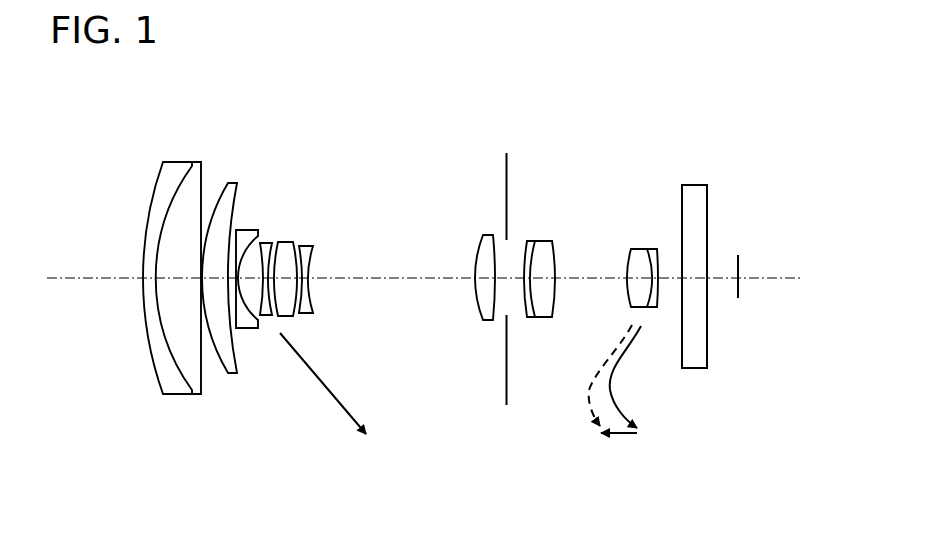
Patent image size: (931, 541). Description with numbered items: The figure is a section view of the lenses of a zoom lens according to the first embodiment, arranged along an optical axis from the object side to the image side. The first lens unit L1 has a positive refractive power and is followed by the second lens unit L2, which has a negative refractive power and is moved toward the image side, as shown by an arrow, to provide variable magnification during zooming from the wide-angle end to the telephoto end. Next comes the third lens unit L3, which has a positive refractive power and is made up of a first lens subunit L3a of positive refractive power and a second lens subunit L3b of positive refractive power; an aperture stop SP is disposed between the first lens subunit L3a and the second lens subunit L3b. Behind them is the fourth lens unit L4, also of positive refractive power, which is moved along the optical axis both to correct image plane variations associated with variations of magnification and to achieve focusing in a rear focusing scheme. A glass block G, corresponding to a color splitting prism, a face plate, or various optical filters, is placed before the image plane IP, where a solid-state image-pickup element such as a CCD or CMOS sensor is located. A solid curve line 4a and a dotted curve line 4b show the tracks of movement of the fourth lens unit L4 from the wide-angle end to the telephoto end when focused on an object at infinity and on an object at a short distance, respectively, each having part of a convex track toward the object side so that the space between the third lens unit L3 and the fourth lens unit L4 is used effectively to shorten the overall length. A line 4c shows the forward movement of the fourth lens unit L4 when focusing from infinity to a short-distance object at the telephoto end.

The first lens unit L1 is at (154, 161).
The second lens unit L2 is at (315, 228).
The third lens unit L3 is at (567, 93).
The first lens subunit L3a is at (500, 231).
The second lens subunit L3b is at (558, 231).
The fourth lens unit L4 is at (622, 231).
The aperture stop SP is at (507, 155).
The glass block G is at (693, 195).
The image plane IP is at (738, 255).
The solid curve line 4a is at (619, 371).
The dotted curve line 4b is at (598, 368).
The line 4c is at (620, 436).